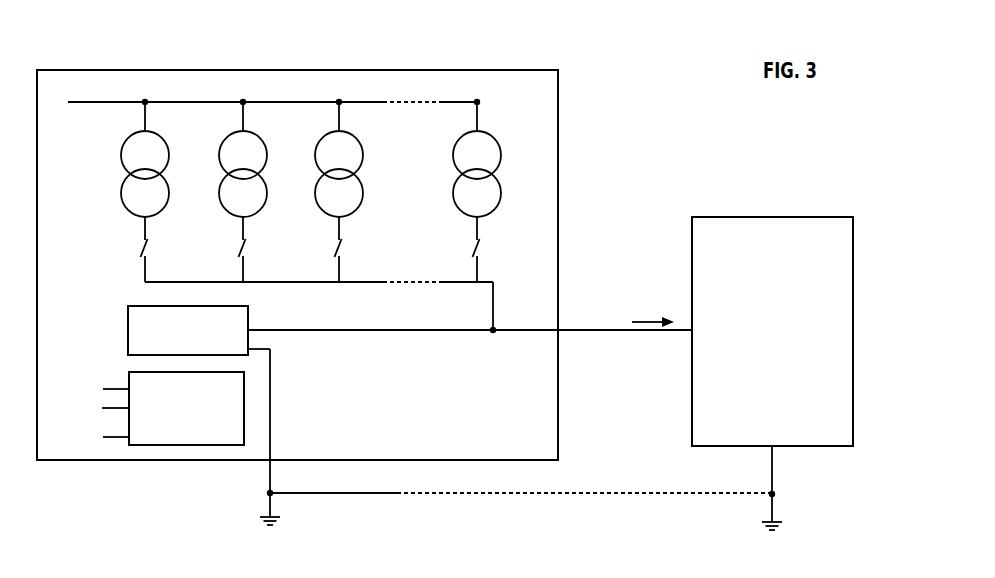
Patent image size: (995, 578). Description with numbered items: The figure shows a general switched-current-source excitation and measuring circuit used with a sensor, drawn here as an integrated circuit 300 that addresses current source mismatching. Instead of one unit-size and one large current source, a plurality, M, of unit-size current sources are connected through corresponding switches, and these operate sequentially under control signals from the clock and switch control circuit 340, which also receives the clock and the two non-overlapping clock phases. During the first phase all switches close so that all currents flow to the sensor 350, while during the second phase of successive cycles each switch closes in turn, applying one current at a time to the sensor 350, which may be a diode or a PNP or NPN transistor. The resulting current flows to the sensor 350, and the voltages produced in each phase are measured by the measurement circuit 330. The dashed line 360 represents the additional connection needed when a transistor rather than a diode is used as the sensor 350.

The integrated circuit 300 is at (364, 297).
The measurement circuit 330 is at (145, 330).
The clock and switch control circuit 340 is at (226, 408).
The sensor 350 is at (772, 354).
The dashed line 360 is at (519, 475).